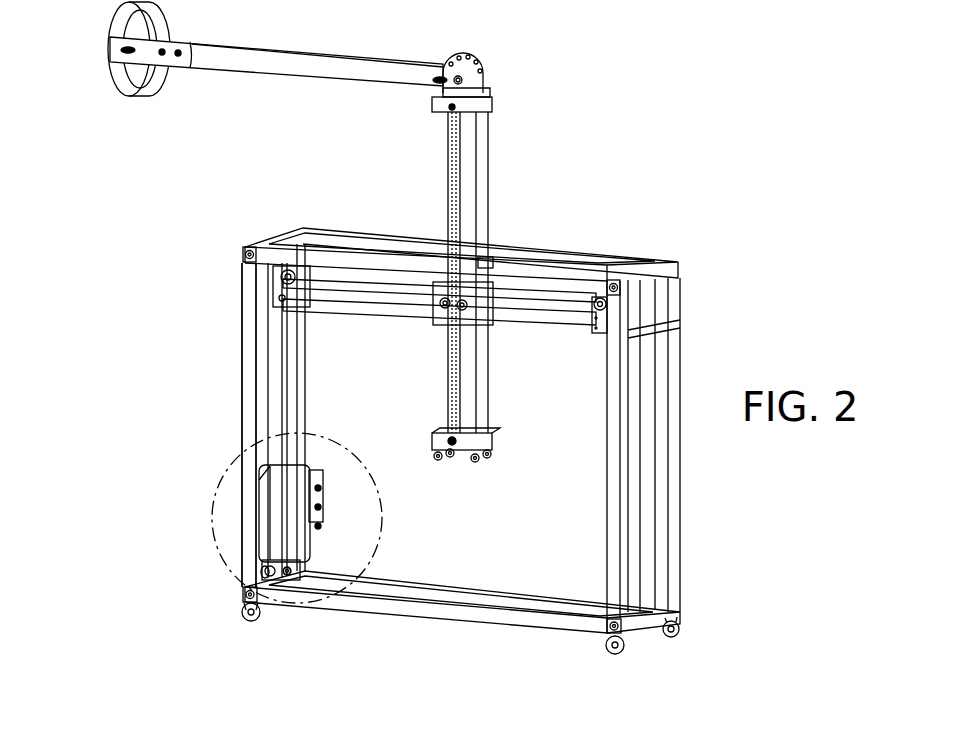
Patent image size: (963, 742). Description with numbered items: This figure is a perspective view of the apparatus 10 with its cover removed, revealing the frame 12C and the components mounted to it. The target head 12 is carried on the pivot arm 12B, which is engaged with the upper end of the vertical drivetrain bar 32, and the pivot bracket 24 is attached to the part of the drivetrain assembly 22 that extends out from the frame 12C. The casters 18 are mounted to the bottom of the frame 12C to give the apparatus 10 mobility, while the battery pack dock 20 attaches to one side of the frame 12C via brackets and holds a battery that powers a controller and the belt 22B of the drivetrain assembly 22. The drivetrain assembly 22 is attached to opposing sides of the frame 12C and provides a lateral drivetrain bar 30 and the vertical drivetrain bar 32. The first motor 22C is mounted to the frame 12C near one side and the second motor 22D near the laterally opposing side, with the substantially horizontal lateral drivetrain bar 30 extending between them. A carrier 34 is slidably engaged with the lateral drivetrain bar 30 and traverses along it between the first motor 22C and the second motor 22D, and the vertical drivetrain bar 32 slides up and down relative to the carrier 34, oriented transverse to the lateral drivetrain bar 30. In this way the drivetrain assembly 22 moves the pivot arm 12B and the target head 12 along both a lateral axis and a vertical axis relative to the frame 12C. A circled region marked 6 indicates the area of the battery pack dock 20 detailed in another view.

The apparatus 10 is at (737, 123).
The target head 12 is at (106, 22).
The pivot arm 12B is at (305, 63).
The frame 12C is at (245, 343).
The casters 18 is at (250, 620).
The battery pack dock 20 is at (300, 517).
The drivetrain assembly 22 is at (546, 418).
The belt 22B is at (458, 370).
The first motor 22C is at (282, 292).
The second motor 22D is at (593, 300).
The pivot bracket 24 is at (487, 72).
The lateral drivetrain bar 30 is at (366, 312).
The vertical drivetrain bar 32 is at (480, 158).
The carrier 34 is at (488, 263).
The section view indicator circle 6 is at (234, 440).